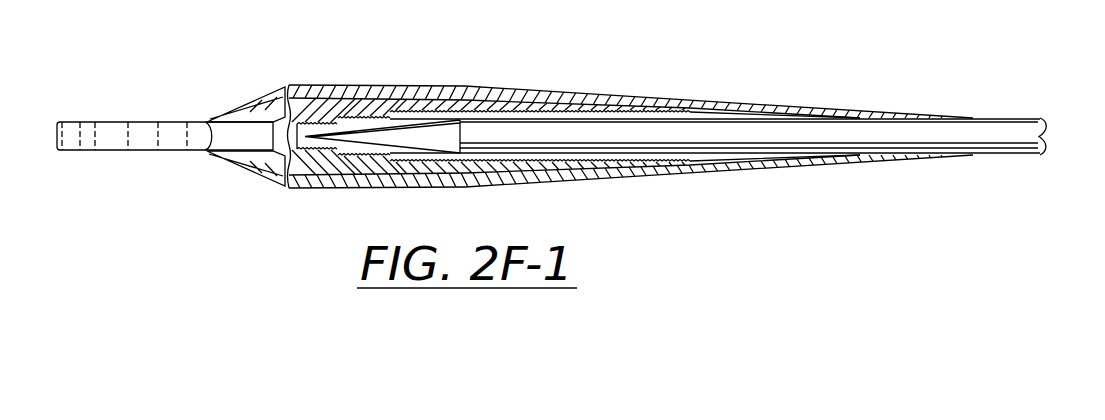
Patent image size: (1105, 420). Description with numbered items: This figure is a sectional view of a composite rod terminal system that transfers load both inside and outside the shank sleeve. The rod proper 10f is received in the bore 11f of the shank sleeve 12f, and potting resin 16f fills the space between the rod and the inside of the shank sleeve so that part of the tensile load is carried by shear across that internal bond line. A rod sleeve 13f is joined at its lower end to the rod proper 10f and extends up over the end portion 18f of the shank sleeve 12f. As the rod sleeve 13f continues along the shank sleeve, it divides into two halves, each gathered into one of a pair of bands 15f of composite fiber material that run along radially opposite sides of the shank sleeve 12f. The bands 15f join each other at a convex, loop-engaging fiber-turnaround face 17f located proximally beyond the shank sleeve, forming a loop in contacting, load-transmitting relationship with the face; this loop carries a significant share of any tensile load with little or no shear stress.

The rod proper 10f is at (1018, 117).
The bore 11f is at (630, 112).
The shank sleeve 12f is at (478, 98).
The rod sleeve 13f is at (860, 108).
The bands 15f is at (435, 87).
The potting resin 16f is at (397, 115).
The fiber-turnaround face 17f is at (211, 140).
The end portion 18f is at (675, 108).